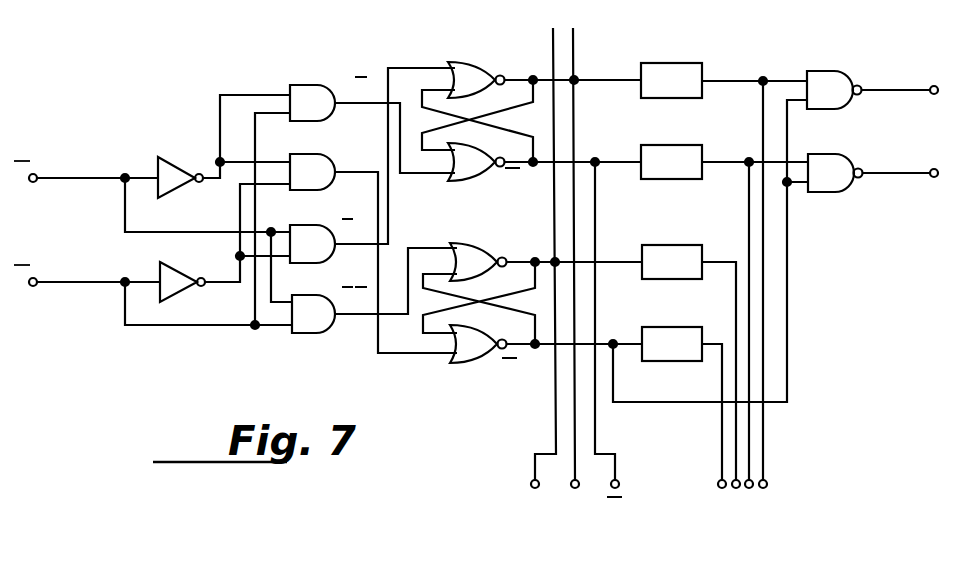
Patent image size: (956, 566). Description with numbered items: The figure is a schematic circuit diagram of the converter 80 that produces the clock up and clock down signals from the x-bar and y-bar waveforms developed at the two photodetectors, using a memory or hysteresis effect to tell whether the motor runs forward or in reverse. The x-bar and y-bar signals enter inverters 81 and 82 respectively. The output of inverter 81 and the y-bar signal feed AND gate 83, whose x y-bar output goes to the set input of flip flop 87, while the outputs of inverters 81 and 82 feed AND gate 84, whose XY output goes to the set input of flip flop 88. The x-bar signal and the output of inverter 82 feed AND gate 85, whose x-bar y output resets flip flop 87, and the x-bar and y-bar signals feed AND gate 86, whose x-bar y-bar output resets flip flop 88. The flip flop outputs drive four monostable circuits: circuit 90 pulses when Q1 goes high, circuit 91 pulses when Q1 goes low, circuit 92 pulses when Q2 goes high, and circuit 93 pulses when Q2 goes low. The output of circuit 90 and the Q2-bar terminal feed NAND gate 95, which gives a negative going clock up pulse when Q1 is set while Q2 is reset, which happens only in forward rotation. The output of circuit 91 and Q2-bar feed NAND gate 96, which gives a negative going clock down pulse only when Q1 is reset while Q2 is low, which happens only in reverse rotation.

The converter 80 is at (490, 432).
The inverter 81 is at (170, 172).
The inverter 82 is at (178, 282).
The AND gate 83 is at (302, 92).
The AND gate 84 is at (301, 160).
The AND gate 85 is at (300, 233).
The AND gate 86 is at (303, 305).
The flip flop 87 is at (542, 133).
The flip flop 88 is at (549, 316).
The monostable circuit 90 is at (678, 73).
The monostable circuit 91 is at (683, 160).
The monostable circuit 92 is at (680, 253).
The monostable circuit 93 is at (678, 337).
The NAND gate 95 is at (829, 80).
The NAND gate 96 is at (840, 180).